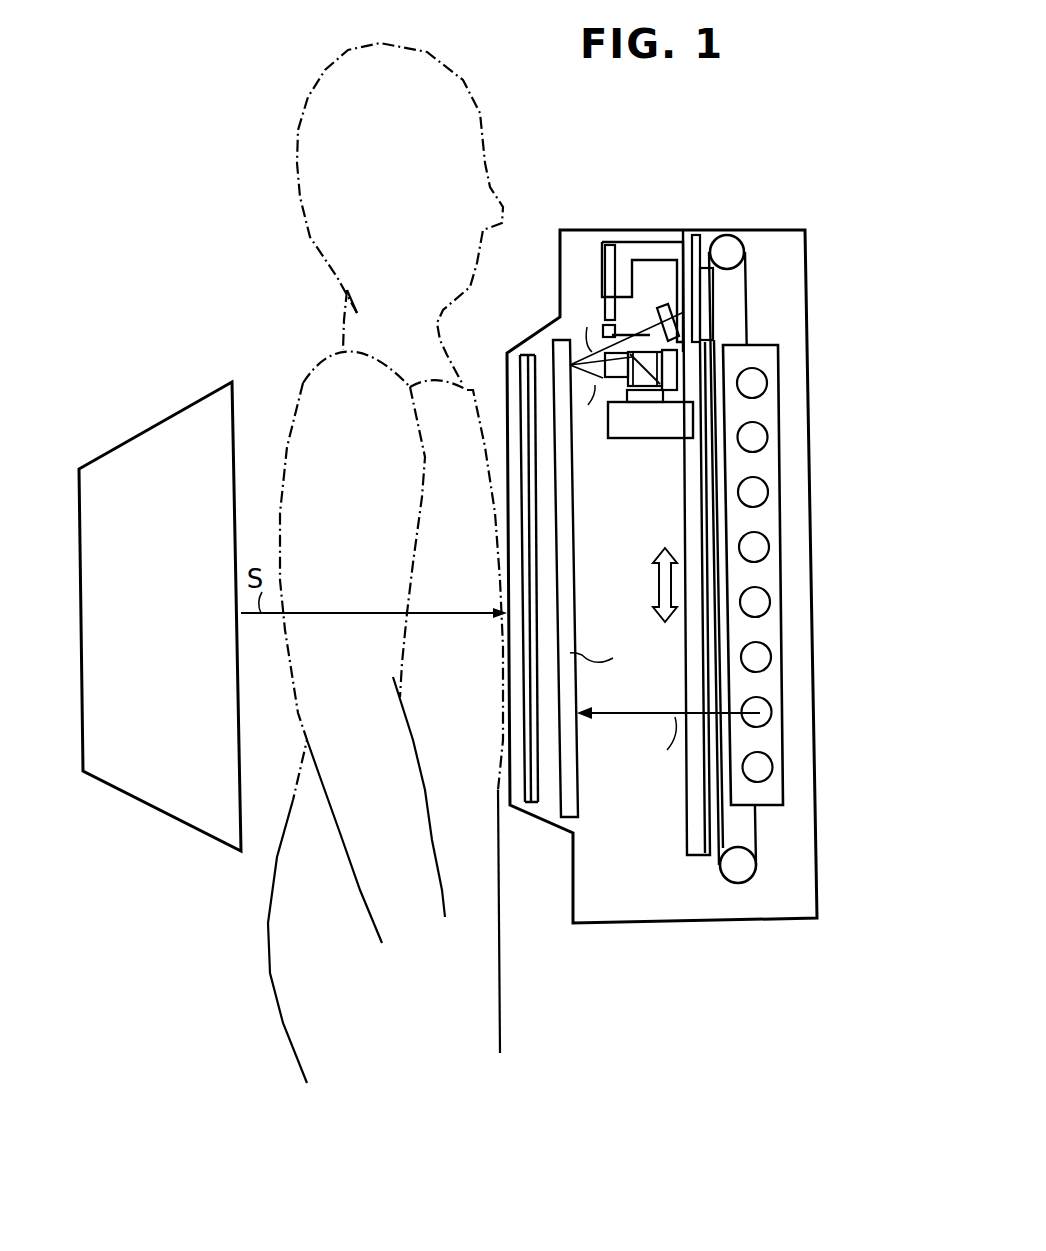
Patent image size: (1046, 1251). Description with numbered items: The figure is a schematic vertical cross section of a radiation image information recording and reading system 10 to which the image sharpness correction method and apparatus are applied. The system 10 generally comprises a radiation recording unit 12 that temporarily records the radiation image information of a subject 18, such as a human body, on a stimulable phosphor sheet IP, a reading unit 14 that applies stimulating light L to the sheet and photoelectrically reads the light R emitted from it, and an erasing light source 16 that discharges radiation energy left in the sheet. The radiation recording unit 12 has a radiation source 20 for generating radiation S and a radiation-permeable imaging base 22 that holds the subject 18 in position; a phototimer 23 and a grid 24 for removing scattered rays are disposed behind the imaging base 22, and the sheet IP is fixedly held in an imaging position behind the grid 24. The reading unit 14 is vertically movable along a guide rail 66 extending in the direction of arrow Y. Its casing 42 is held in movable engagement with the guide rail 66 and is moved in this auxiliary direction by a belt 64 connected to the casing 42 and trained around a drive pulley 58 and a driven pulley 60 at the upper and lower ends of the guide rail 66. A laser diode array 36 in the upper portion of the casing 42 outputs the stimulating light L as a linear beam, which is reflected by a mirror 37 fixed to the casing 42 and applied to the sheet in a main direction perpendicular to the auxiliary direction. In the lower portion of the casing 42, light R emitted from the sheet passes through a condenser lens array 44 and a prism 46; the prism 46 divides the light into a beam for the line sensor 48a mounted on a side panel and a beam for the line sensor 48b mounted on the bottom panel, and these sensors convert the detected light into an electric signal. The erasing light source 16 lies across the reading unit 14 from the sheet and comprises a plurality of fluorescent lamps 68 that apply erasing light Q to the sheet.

The radiation image information recording and reading system 10 is at (786, 140).
The radiation recording unit 12 is at (468, 369).
The reading unit 14 is at (642, 452).
The erasing light source 16 is at (775, 812).
The subject 18 is at (303, 383).
The radiation source 20 is at (200, 397).
The imaging base 22 is at (520, 392).
The phototimer 23 is at (512, 496).
The grid 24 is at (533, 685).
The laser diode array 36 is at (607, 325).
The mirror 37 is at (715, 312).
The casing 42 is at (665, 242).
The condenser lens array 44 is at (618, 375).
The prism 46 is at (652, 357).
The line sensor 48a is at (673, 360).
The line sensor 48b is at (652, 390).
The drive pulley 58 is at (727, 248).
The driven pulley 60 is at (740, 868).
The belt 64 is at (748, 332).
The guide rail 66 is at (697, 838).
The fluorescent lamps 68 is at (760, 713).